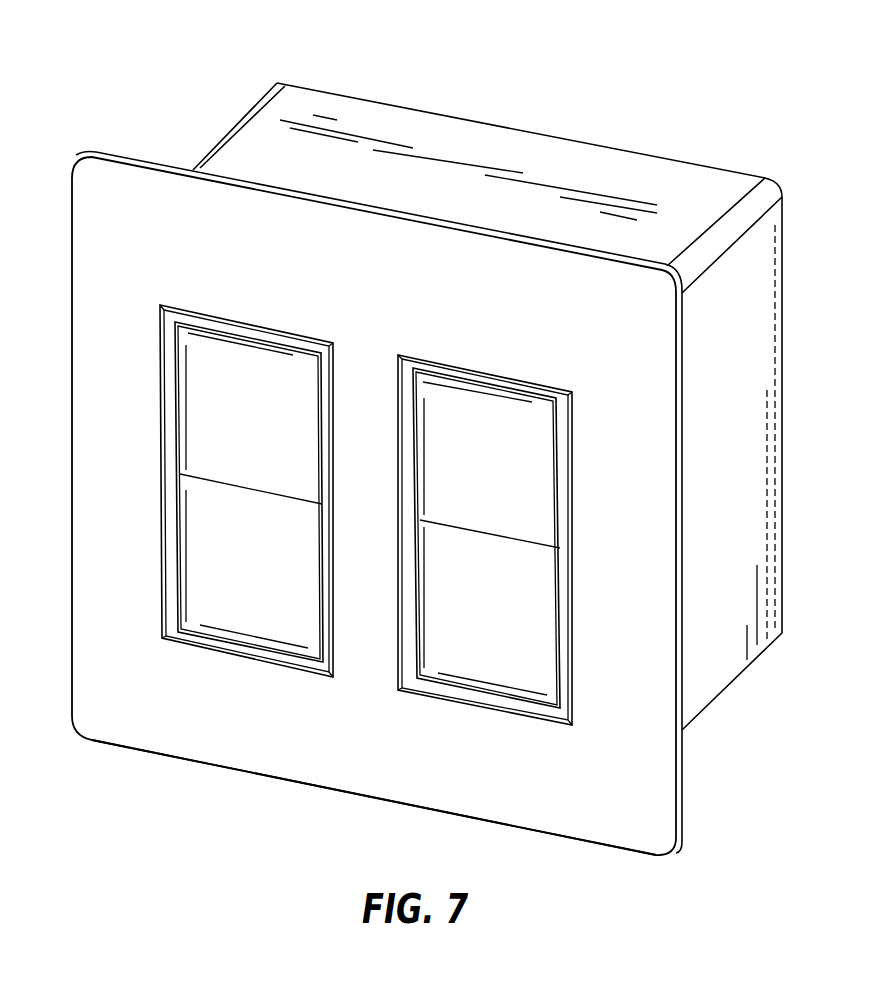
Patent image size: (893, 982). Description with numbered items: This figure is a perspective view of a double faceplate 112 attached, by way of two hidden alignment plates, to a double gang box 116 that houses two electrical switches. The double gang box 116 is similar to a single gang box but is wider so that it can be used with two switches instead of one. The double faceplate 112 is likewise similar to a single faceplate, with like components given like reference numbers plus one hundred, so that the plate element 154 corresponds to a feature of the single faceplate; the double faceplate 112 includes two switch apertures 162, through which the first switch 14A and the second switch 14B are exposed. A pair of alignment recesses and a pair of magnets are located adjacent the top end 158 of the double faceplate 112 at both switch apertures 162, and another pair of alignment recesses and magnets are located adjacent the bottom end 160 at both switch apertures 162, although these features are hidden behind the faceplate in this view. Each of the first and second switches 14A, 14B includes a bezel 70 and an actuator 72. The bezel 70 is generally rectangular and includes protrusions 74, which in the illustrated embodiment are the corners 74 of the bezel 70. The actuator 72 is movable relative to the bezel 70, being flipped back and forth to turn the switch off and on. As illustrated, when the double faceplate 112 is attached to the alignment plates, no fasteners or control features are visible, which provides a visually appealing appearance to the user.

The double faceplate 112 is at (522, 287).
The double gang box 116 is at (360, 108).
The front plate 154 is at (100, 732).
The top end 158 is at (154, 160).
The bottom end 160 is at (225, 776).
The first switch 14A is at (200, 610).
The second switch 14B is at (457, 663).
The bezel 70 is at (170, 415).
The actuator 72 is at (297, 575).
The protrusions 74 is at (162, 305).
The switch apertures 162 is at (160, 512).